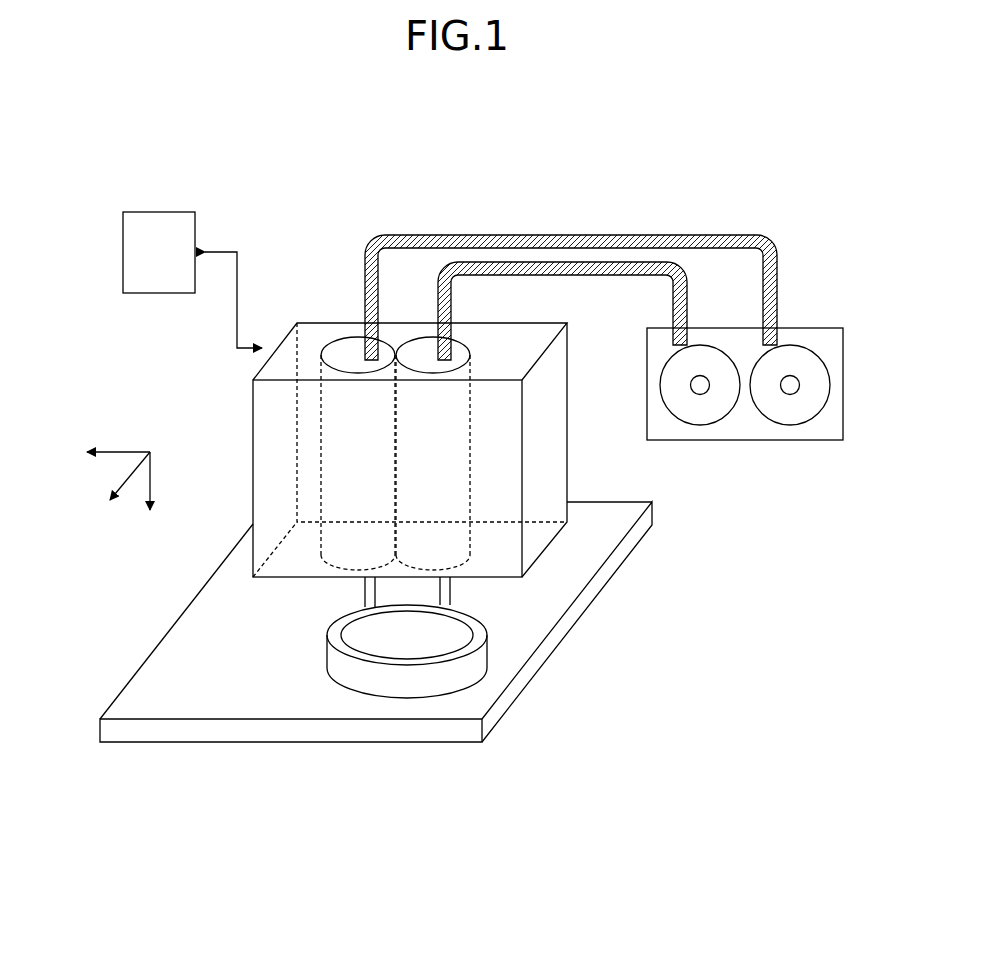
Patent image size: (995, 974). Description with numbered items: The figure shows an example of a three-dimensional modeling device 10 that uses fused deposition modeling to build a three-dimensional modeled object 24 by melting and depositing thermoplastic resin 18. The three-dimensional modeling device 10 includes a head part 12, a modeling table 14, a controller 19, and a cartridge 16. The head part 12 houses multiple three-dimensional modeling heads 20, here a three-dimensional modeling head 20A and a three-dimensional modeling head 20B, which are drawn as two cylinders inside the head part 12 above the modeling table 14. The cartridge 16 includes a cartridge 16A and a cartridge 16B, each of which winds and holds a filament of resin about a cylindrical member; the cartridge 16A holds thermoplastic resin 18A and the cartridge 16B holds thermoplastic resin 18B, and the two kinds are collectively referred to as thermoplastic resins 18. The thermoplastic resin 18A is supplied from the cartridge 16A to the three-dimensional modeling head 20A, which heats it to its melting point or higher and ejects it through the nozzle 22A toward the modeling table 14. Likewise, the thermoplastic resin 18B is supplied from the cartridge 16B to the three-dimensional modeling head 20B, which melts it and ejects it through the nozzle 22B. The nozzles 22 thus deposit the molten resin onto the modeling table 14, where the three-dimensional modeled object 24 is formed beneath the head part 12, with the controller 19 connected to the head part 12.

The three-dimensional modeling device 10 is at (688, 116).
The head part 12 is at (570, 462).
The modeling table 14 is at (590, 557).
The cartridge 16 is at (745, 383).
The cartridge 16A is at (790, 425).
The cartridge 16B is at (700, 425).
The thermoplastic resin 18 is at (571, 247).
The thermoplastic resin 18A is at (580, 235).
The thermoplastic resin 18B is at (567, 185).
The controller 19 is at (157, 211).
The three-dimensional modeling heads 20 is at (395, 351).
The three-dimensional modeling head 20A is at (312, 367).
The three-dimensional modeling head 20B is at (441, 375).
The nozzles 22 is at (547, 618).
The nozzle 22A is at (451, 598).
The nozzle 22B is at (376, 585).
The three-dimensional modeled object 24 is at (402, 682).